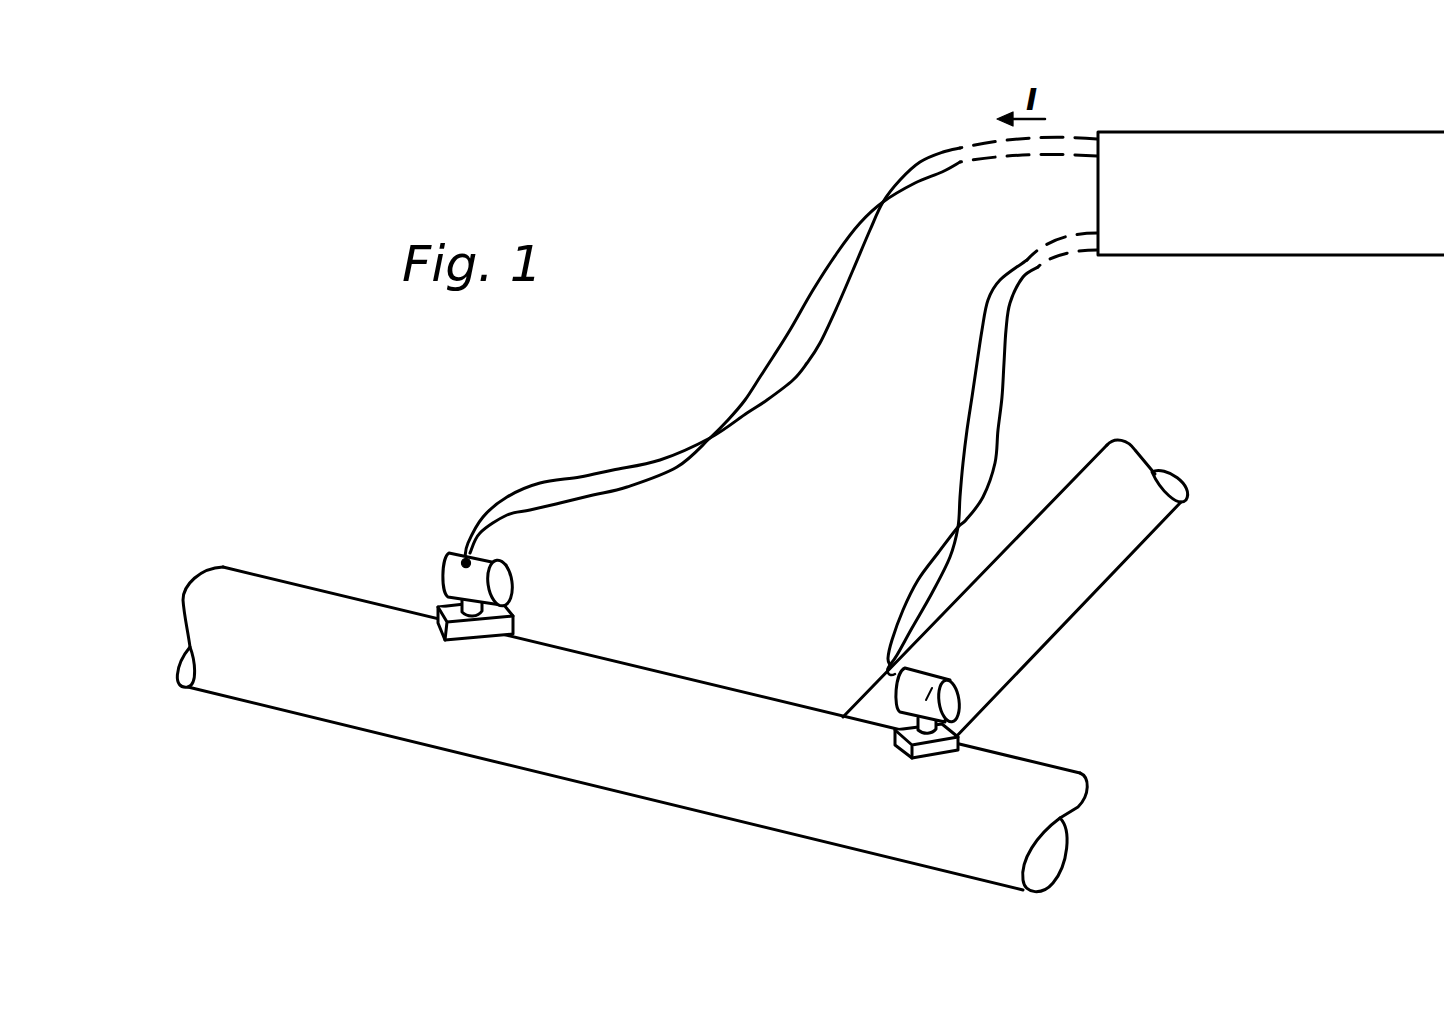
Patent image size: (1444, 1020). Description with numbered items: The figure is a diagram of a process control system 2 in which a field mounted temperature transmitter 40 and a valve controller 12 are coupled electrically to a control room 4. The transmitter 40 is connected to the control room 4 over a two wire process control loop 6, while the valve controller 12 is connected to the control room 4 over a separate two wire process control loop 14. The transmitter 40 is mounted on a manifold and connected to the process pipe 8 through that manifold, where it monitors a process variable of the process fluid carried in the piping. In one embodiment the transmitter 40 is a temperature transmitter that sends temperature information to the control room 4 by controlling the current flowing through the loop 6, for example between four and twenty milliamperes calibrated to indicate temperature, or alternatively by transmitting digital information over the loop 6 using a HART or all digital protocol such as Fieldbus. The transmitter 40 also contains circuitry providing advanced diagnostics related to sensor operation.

The process control system 2 is at (165, 392).
The control room 4 is at (1240, 140).
The two wire process control loop 6 is at (780, 348).
The pipe 8 is at (265, 678).
The valve controller 12 is at (957, 683).
The two wire process control loop 14 is at (982, 343).
The field mounted temperature transmitter 40 is at (515, 574).